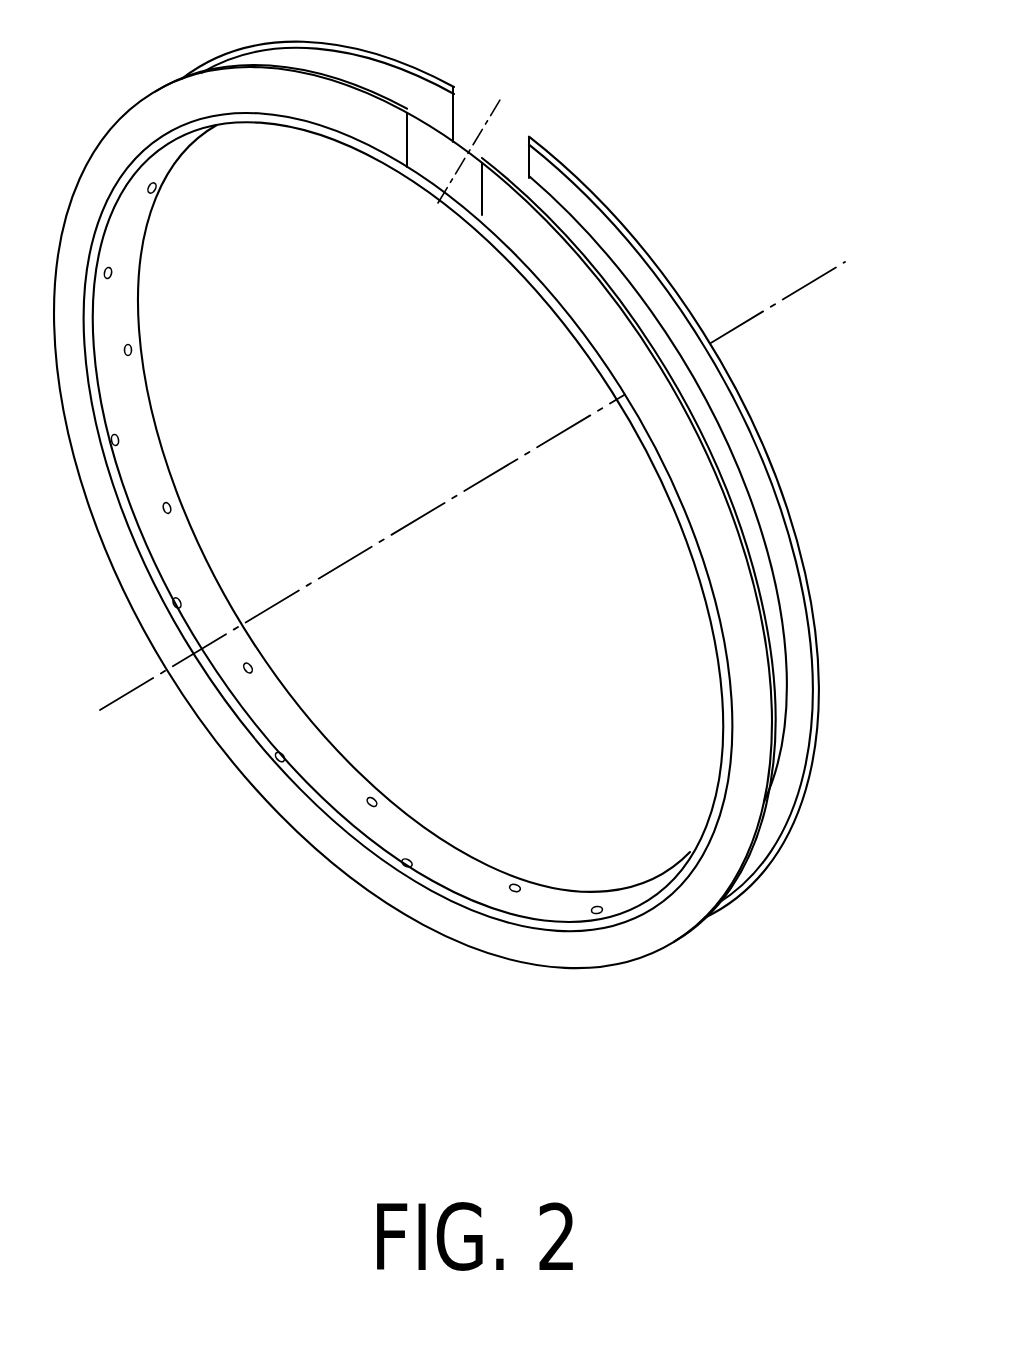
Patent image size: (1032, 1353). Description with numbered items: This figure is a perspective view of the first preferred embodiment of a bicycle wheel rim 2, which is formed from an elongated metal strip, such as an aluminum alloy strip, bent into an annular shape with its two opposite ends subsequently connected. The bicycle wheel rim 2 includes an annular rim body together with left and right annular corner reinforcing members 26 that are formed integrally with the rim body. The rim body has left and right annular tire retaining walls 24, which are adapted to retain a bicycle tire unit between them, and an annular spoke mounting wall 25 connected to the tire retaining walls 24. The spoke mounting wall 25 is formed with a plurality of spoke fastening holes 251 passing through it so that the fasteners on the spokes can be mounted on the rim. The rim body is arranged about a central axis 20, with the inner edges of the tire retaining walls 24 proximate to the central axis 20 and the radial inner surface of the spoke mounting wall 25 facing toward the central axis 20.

The bicycle wheel rim 2 is at (460, 546).
The central axis 20 is at (780, 302).
The tire retaining walls 24 is at (460, 106).
The spoke mounting wall 25 is at (396, 533).
The spoke fastening holes 251 is at (134, 349).
The annular corner reinforcing members 26 is at (473, 140).